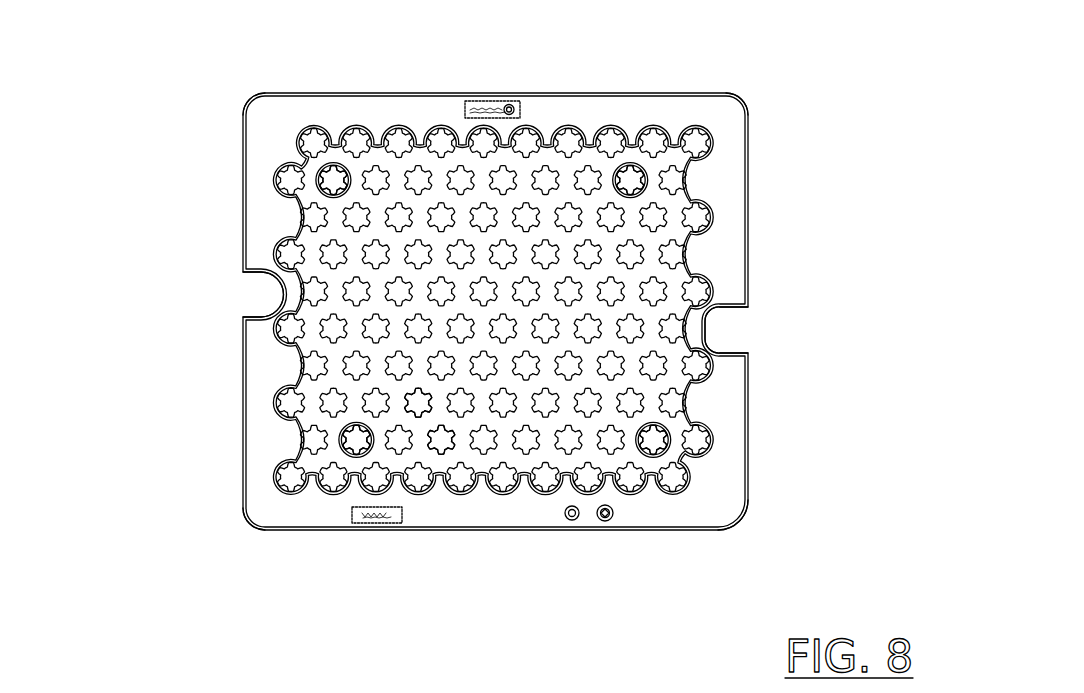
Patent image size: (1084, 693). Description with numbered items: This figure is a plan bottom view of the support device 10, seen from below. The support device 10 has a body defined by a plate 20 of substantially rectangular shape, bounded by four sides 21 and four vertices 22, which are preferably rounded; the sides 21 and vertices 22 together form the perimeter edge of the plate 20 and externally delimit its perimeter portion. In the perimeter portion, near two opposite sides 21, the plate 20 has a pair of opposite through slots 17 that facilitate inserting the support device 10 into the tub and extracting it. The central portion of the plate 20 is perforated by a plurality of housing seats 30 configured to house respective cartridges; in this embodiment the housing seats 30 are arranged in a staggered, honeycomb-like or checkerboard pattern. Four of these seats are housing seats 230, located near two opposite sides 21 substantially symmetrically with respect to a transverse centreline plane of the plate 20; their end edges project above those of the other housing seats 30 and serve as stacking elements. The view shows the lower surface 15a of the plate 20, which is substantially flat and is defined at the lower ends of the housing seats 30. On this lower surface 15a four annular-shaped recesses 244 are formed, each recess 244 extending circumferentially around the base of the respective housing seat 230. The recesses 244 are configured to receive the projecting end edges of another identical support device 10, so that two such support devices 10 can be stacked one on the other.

The support device 10 is at (840, 176).
The lower surface 15a is at (422, 430).
The through slot 17 is at (252, 287).
The plate 20 is at (728, 402).
The side 21 is at (490, 92).
The vertex 22 is at (240, 108).
The housing seat 30 is at (442, 212).
The housing seat 230 is at (640, 174).
The annular-shaped recess 244 is at (337, 163).